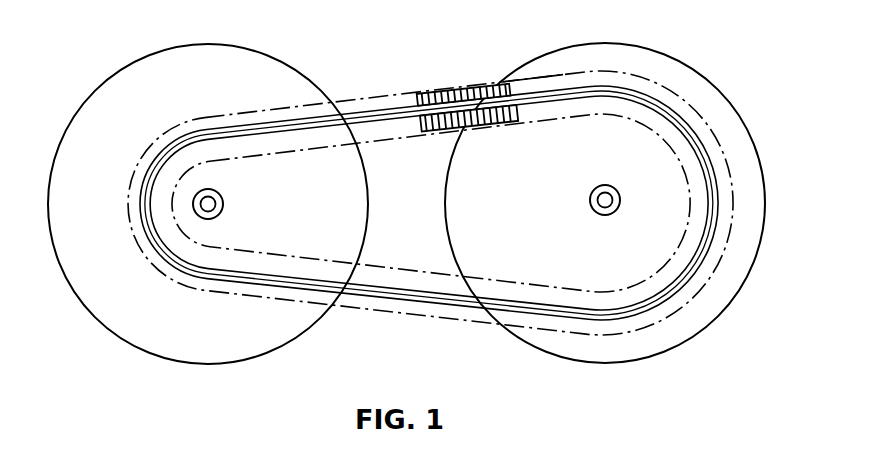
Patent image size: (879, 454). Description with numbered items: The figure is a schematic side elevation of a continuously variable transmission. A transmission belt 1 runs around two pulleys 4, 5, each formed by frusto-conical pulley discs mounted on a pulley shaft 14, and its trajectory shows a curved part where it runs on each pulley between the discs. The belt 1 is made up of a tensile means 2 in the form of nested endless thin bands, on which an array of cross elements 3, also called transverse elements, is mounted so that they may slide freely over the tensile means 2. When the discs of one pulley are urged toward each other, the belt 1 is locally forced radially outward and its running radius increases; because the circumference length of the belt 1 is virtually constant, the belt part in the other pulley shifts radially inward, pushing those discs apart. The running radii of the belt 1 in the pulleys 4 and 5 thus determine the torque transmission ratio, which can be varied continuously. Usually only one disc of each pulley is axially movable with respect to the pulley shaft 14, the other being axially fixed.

The transmission belt 1 is at (382, 89).
The tensile means 2 is at (563, 80).
The cross elements 3 is at (437, 91).
The pulley 4 is at (128, 319).
The pulley 5 is at (671, 333).
The pulley shaft 14 is at (222, 193).